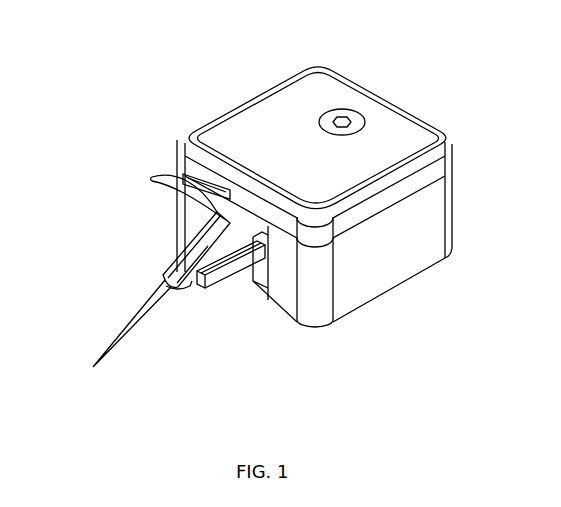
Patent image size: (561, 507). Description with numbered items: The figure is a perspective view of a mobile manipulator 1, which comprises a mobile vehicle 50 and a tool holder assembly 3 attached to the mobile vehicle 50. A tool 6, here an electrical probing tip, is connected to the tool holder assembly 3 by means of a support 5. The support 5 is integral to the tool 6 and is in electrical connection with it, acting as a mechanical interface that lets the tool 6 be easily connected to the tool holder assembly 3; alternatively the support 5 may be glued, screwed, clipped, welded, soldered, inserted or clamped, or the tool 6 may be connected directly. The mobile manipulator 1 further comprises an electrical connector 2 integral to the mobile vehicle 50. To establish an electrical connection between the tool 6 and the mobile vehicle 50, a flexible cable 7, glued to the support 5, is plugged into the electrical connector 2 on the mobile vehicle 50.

The mobile manipulator 1 is at (390, 100).
The mobile vehicle 50 is at (283, 102).
The electrical connector 2 is at (187, 165).
The flexible cable 7 is at (162, 183).
The support 5 is at (178, 262).
The tool 6 is at (145, 303).
The tool holder assembly 3 is at (228, 278).